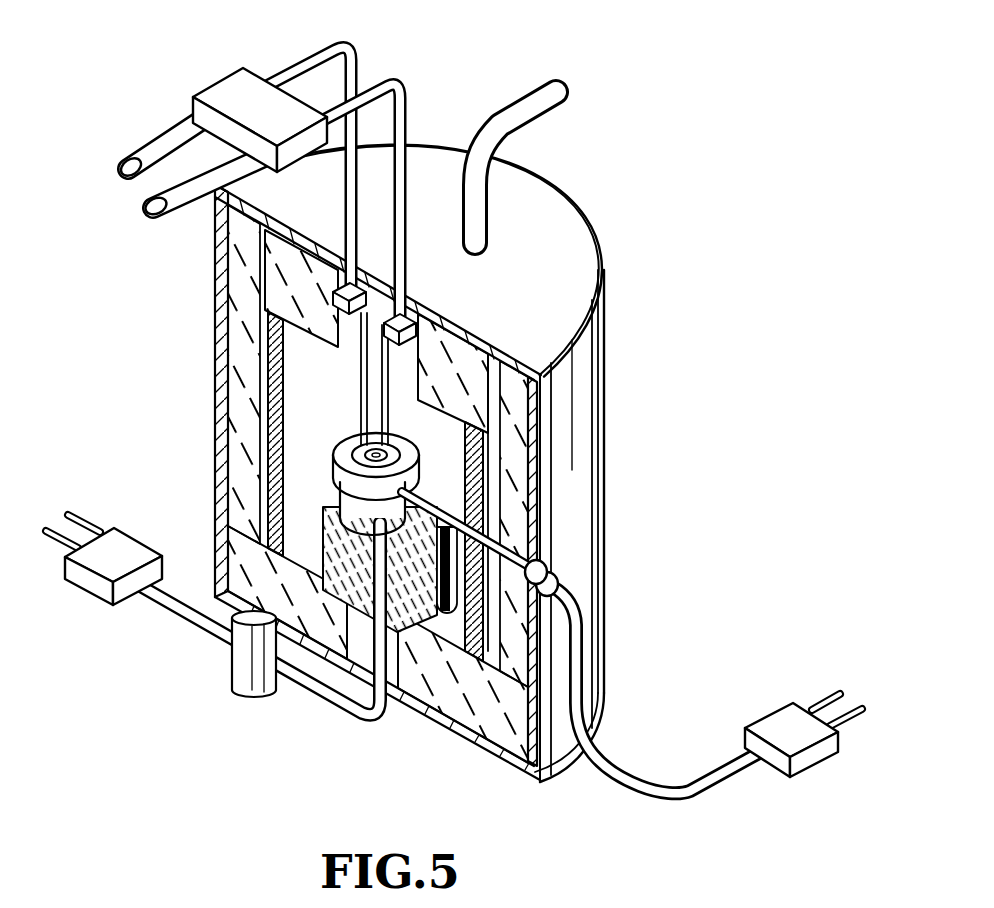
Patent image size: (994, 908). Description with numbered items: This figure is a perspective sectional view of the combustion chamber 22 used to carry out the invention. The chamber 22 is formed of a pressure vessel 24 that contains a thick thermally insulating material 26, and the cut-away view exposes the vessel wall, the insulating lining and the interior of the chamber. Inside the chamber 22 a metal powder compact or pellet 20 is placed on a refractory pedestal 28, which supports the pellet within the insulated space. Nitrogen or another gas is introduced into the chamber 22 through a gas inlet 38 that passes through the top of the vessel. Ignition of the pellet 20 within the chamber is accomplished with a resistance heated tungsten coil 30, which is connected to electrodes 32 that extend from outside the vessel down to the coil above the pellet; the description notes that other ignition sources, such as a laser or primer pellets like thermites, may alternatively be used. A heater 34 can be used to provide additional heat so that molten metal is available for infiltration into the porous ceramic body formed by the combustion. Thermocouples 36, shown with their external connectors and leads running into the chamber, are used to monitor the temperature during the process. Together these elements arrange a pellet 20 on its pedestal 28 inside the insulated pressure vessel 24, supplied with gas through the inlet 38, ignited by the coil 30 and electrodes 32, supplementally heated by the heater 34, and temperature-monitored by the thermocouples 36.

The metal powder compact or pellet 20 is at (340, 463).
The combustion chamber 22 is at (634, 225).
The pressure vessel 24 is at (603, 440).
The thermally insulating material 26 is at (443, 710).
The refractory pedestal 28 is at (325, 532).
The resistance heated tungsten coil 30 is at (360, 397).
The electrodes 32 is at (395, 76).
The heater 34 is at (480, 507).
The thermocouples 36 is at (100, 585).
The gas inlet 38 is at (522, 93).